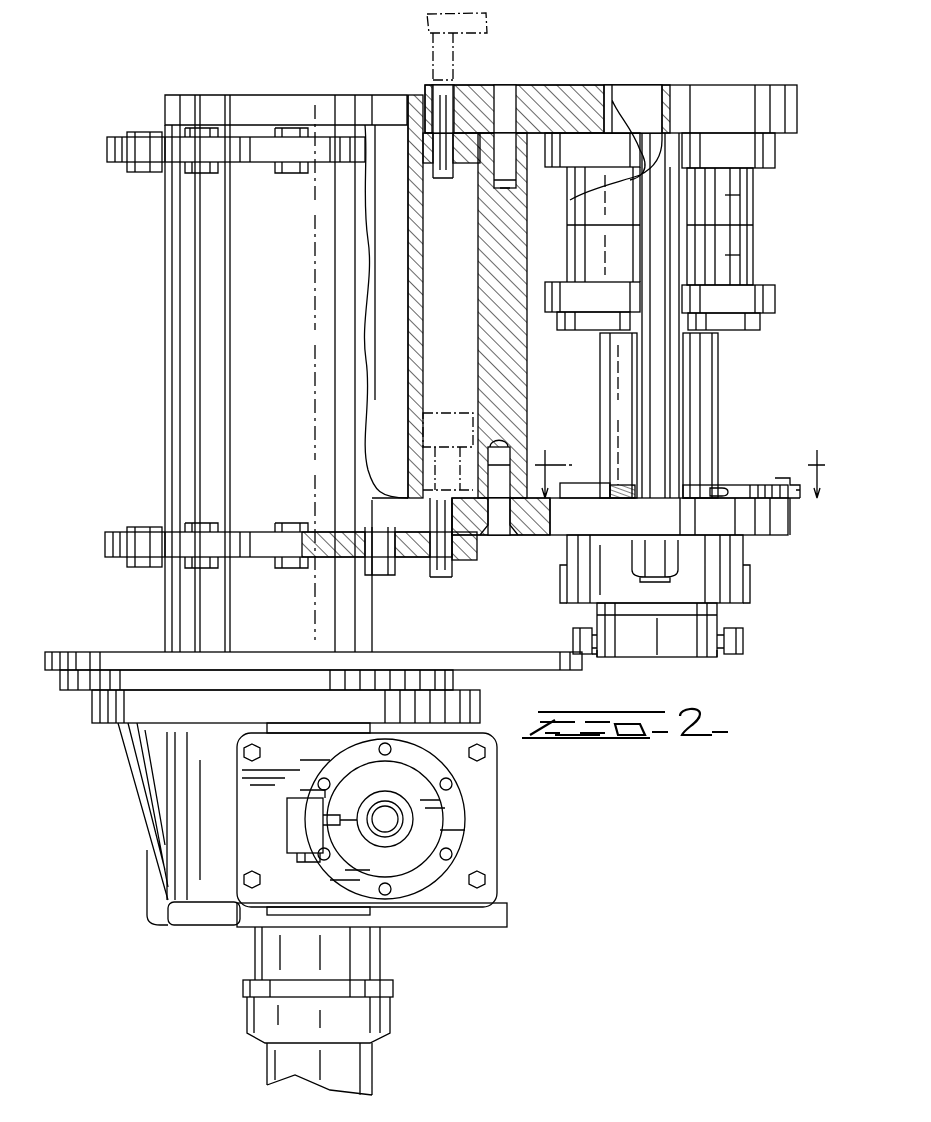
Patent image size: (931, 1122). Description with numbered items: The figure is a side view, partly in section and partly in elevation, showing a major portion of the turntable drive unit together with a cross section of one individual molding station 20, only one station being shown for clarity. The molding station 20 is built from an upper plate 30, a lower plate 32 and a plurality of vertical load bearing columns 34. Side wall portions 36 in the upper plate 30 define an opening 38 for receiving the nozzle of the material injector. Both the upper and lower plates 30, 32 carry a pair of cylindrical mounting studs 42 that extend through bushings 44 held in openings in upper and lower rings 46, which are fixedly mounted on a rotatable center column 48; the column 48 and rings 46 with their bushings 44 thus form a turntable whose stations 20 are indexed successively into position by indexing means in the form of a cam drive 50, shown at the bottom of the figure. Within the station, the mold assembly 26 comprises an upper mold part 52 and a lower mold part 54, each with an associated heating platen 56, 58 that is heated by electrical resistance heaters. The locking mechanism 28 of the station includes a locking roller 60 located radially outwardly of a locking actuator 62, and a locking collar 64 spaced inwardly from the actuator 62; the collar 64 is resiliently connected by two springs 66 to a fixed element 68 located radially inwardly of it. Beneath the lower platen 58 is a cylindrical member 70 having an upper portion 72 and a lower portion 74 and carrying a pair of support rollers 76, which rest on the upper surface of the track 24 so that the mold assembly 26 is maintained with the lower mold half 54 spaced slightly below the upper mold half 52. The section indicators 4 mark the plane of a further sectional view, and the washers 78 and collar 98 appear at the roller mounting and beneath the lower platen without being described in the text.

The section line 4- 4 is at (680, 473).
The molding station 20 is at (670, 70).
The track 24 is at (458, 666).
The mold assembly 26 is at (756, 226).
The locking mechanism 28 is at (800, 548).
The upper plate 30 is at (738, 124).
The lower plate 32 is at (736, 531).
The vertical load bearing column 34 is at (490, 238).
The side wall portion 36 is at (628, 112).
The opening 38 is at (638, 100).
The cylindrical mounting stud 42 is at (445, 180).
The bushing 44 is at (436, 170).
The ring 46 is at (258, 150).
The rotatable center column 48 is at (283, 359).
The cam drive 50 is at (534, 852).
The upper mold part 52 is at (735, 198).
The lower mold part 54 is at (753, 255).
The heating platen 56 is at (775, 155).
The heating platen 58 is at (775, 300).
The locking roller 60 is at (796, 494).
The locking actuator 62 is at (762, 488).
The locking collar 64 is at (737, 492).
The spring 66 is at (583, 516).
The fixed element 68 is at (580, 487).
The cylindrical member 70 is at (698, 415).
The upper portion 72 is at (708, 392).
The lower portion 74 is at (652, 644).
The support roller 76 is at (576, 636).
The washer 78 is at (595, 655).
The retaining collar 98 is at (760, 328).